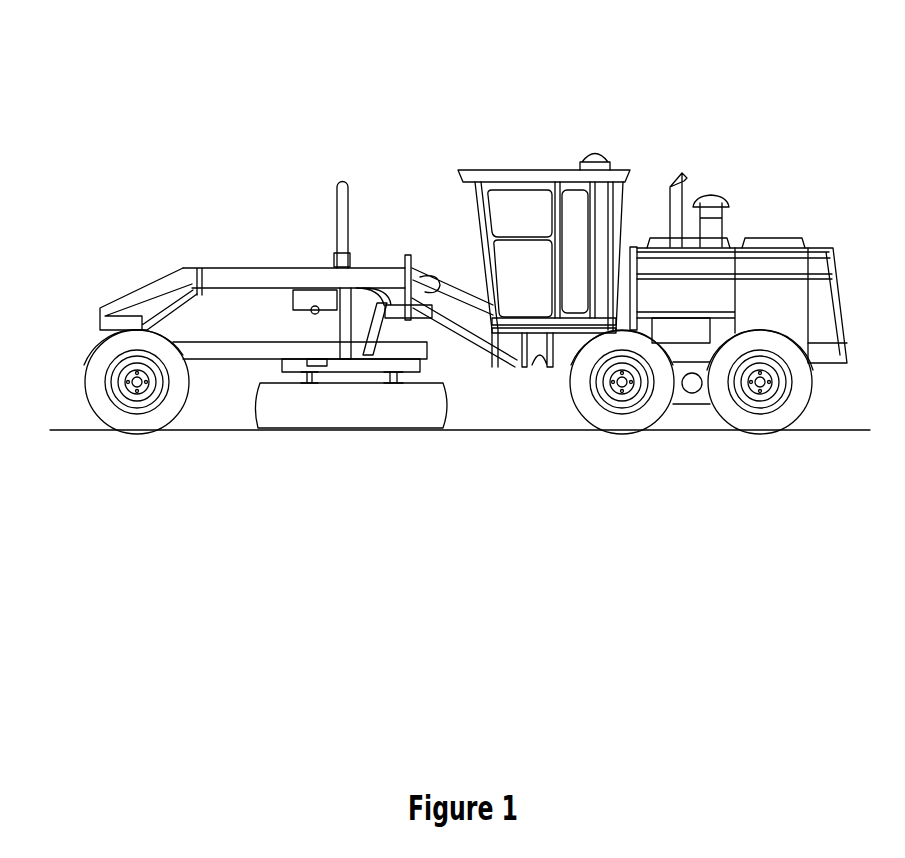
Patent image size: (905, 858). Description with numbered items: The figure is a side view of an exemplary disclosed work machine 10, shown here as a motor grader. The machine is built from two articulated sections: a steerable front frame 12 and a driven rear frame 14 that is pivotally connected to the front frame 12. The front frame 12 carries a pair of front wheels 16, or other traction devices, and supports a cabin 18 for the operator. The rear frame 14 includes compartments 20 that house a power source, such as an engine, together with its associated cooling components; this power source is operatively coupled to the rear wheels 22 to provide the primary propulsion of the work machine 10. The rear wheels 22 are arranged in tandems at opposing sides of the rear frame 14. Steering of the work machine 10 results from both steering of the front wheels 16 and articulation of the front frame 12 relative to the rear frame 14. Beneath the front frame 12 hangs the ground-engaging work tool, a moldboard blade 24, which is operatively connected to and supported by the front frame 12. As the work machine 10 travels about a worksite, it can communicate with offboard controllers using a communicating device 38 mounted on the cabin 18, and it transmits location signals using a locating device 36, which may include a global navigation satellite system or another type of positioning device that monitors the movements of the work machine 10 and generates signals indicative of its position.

The work machine 10 is at (205, 151).
The front frame 12 is at (612, 93).
The rear frame 14 is at (862, 93).
The front wheels 16 is at (130, 414).
The cabin 18 is at (513, 178).
The compartments 20 is at (772, 293).
The rear wheels 22 is at (632, 423).
The moldboard blade 24 is at (337, 414).
The locating device 36 is at (323, 297).
The communicating device 38 is at (612, 157).